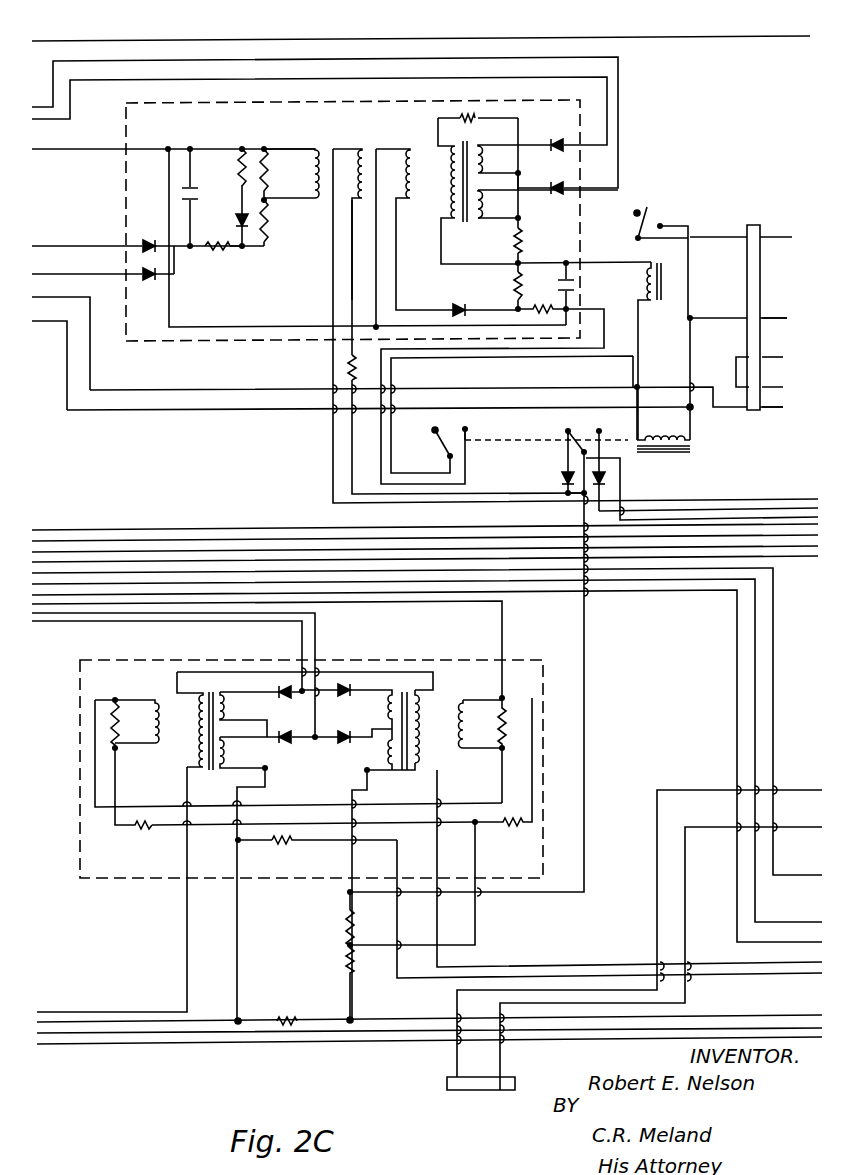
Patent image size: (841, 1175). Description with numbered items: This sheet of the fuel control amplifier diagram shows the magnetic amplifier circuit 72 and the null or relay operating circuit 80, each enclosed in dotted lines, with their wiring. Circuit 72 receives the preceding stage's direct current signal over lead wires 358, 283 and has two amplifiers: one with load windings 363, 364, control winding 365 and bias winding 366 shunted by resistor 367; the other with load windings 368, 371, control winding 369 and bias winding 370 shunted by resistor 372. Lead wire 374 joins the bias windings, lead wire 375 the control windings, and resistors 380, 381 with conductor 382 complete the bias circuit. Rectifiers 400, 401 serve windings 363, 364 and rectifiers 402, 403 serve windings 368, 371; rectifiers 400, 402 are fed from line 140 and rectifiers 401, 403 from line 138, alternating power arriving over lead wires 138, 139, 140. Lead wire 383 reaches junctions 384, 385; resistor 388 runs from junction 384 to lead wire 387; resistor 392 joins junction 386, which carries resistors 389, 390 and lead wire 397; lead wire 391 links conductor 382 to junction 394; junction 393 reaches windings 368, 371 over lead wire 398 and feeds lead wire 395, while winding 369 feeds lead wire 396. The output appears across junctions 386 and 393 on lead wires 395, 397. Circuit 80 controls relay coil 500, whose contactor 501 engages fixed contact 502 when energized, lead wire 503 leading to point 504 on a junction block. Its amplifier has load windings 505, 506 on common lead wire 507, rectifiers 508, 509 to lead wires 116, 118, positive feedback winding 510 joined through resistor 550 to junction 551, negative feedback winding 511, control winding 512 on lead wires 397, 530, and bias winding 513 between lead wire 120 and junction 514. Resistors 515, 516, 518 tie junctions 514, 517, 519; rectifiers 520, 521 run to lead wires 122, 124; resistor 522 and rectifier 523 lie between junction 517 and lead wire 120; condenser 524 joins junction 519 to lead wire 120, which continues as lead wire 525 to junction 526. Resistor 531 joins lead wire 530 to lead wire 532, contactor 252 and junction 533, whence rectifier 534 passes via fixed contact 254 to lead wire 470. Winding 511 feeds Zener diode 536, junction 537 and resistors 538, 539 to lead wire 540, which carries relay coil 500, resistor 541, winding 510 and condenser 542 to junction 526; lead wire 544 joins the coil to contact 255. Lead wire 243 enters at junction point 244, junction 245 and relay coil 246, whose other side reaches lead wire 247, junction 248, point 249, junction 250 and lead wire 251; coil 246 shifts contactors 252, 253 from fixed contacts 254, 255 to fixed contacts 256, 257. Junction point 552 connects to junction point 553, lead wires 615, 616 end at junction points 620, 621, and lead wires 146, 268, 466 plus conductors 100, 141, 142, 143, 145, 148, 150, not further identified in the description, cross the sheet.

The magnetic amplifier circuit 72 is at (102, 660).
The null circuit 80 is at (582, 116).
The conductor 100 is at (690, 38).
The lead wire 116 is at (245, 78).
The lead wire 118 is at (183, 60).
The lead wire 120 is at (50, 152).
The lead wire 122 is at (53, 246).
The lead wire 124 is at (58, 274).
The lead wire 138 is at (317, 633).
The lead wire 139 is at (413, 603).
The lead wire 140 is at (197, 607).
The conductor 141 is at (225, 573).
The conductor 142 is at (677, 593).
The conductor 143 is at (248, 584).
The conductor 145 is at (200, 562).
The lead wire 146 is at (162, 552).
The conductor 148 is at (95, 541).
The conductor 150 is at (78, 529).
The lead wire 243 is at (137, 390).
The junction point 244 is at (755, 410).
The junction 245 is at (637, 385).
The relay coil 246 is at (670, 447).
The lead wire 247 is at (692, 353).
The junction 248 is at (690, 313).
The terminal board point 249 is at (753, 310).
The junction 250 is at (692, 407).
The lead wire 251 is at (140, 412).
The shiftable contactor 252 is at (570, 428).
The shiftable contactor 253 is at (435, 430).
The fixed contact 254 is at (566, 431).
The fixed contact 255 is at (442, 445).
The fixed contact 256 is at (601, 433).
The fixed contact 257 is at (465, 432).
The lead wire 268 is at (115, 1045).
The lead wire 283 is at (193, 1023).
The lead wire 358 is at (70, 1012).
The load winding 363 is at (225, 703).
The load winding 364 is at (228, 758).
The control winding 365 is at (197, 730).
The bias winding 366 is at (162, 703).
The resistor 367 is at (110, 723).
The load winding 368 is at (397, 697).
The control winding 369 is at (418, 715).
The bias winding 370 is at (463, 752).
The load winding 371 is at (418, 762).
The resistor 372 is at (507, 723).
The lead wire 374 is at (293, 805).
The lead wire 375 is at (370, 668).
The resistor 380 is at (513, 826).
The resistor 381 is at (143, 830).
The conductor 382 is at (318, 825).
The lead wire 383 is at (237, 792).
The junction 384 is at (237, 841).
The junction 385 is at (240, 1020).
The junction 386 is at (352, 1020).
The lead wire 387 is at (518, 978).
The resistor 388 is at (283, 843).
The resistor 389 is at (348, 968).
The resistor 390 is at (348, 917).
The lead wire 391 is at (478, 927).
The resistor 392 is at (290, 1026).
The junction 393 is at (352, 890).
The junction 394 is at (352, 944).
The lead wire 395 is at (588, 612).
The lead wire 396 is at (438, 800).
The lead wire 397 is at (330, 275).
The lead wire 398 is at (363, 790).
The rectifier 400 is at (292, 692).
The rectifier 401 is at (268, 706).
The rectifier 402 is at (351, 685).
The rectifier 403 is at (338, 733).
The lead wire 466 is at (767, 510).
The lead wire 470 is at (622, 488).
The relay coil 500 is at (663, 272).
The shiftable contactor 501 is at (639, 211).
The fixed contact 502 is at (637, 236).
The lead wire 503 is at (707, 235).
The junction block point 504 is at (760, 227).
The load winding 505 is at (480, 163).
The load winding 506 is at (480, 210).
The common lead wire 507 is at (520, 172).
The rectifier 508 is at (560, 138).
The rectifier 509 is at (563, 186).
The positive feedback winding 510 is at (453, 147).
The negative feedback winding 511 is at (408, 152).
The control winding 512 is at (365, 148).
The bias winding 513 is at (315, 160).
The junction 514 is at (267, 203).
The resistor 515 is at (267, 160).
The resistor 516 is at (267, 228).
The junction 517 is at (215, 250).
The resistor 518 is at (205, 282).
The junction 519 is at (192, 246).
The rectifier 520 is at (143, 240).
The rectifier 521 is at (143, 281).
The resistor 522 is at (237, 157).
The rectifier 523 is at (317, 194).
The condenser 524 is at (218, 148).
The lead wire 525 is at (207, 325).
The junction 526 is at (574, 300).
The lead wire 530 is at (353, 237).
The resistor 531 is at (345, 367).
The lead wire 532 is at (563, 482).
The junction 533 is at (566, 494).
The rectifier 534 is at (566, 476).
The Zener diode 536 is at (470, 287).
The junction 537 is at (520, 288).
The resistor 538 is at (547, 310).
The resistor 539 is at (516, 292).
The lead wire 540 is at (582, 262).
The resistor 541 is at (492, 212).
The condenser 542 is at (573, 281).
The lead wire 544 is at (688, 318).
The resistor 550 is at (470, 110).
The junction 551 is at (519, 240).
The junction point 552 is at (757, 382).
The junction point 553 is at (755, 352).
The lead wire 615 is at (783, 790).
The lead wire 616 is at (793, 827).
The junction point 620 is at (457, 1090).
The junction point 621 is at (507, 1090).